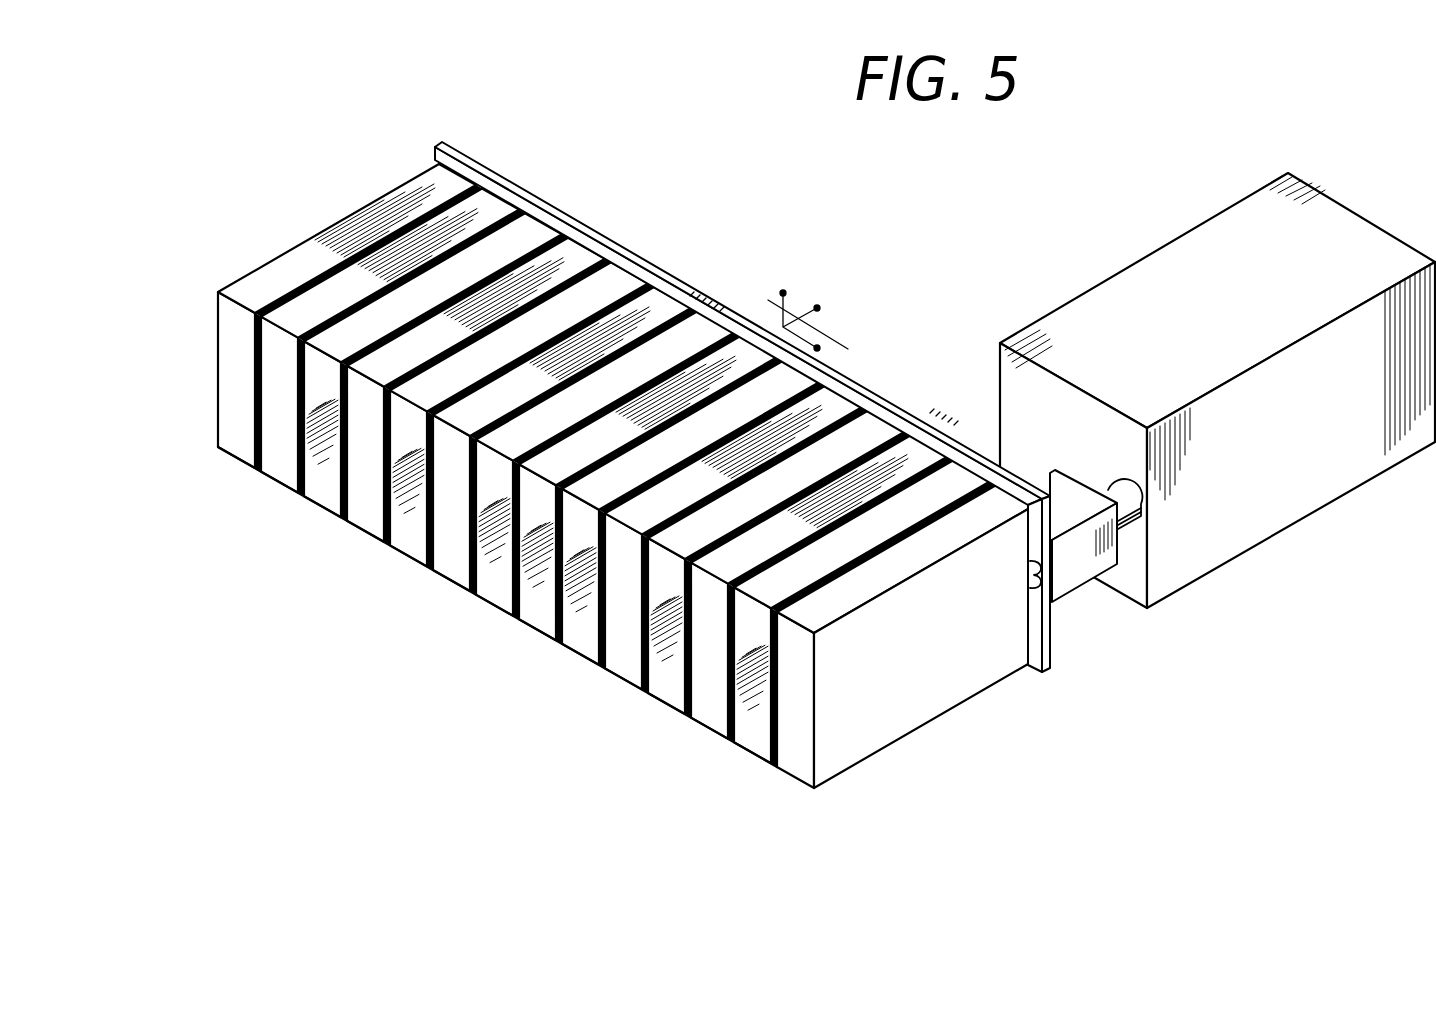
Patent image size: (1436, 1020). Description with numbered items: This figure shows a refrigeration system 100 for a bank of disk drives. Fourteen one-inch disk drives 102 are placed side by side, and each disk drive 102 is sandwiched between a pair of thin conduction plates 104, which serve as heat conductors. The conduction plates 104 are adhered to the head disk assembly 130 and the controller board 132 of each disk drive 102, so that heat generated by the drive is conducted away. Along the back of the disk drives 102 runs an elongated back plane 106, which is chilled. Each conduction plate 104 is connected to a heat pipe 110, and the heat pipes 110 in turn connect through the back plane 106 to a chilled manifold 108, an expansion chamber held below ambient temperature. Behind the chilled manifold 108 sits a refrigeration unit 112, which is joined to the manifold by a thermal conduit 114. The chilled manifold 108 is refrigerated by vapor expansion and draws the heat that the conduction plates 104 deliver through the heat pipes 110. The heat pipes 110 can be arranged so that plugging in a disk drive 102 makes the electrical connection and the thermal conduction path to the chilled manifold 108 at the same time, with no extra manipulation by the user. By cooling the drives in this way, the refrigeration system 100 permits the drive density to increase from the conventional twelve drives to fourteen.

The refrigeration system 100 is at (631, 510).
The disk drive 102 is at (330, 503).
The conduction plate 104 is at (773, 765).
The back plane 106 is at (1038, 630).
The chilled manifold 108 is at (1067, 575).
The heat pipe 110 is at (1030, 563).
The refrigeration unit 112 is at (1093, 313).
The thermal conduit 114 is at (1115, 493).
The head disk assembly 130 is at (433, 587).
The controller board 132 is at (445, 562).